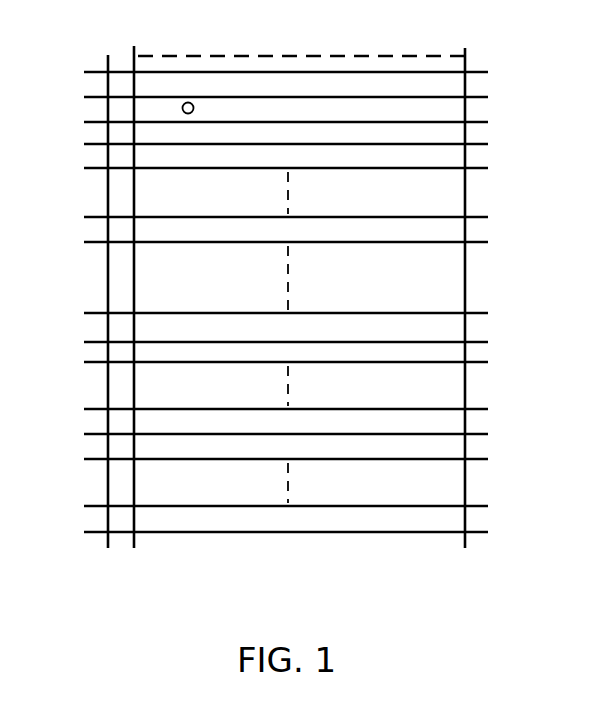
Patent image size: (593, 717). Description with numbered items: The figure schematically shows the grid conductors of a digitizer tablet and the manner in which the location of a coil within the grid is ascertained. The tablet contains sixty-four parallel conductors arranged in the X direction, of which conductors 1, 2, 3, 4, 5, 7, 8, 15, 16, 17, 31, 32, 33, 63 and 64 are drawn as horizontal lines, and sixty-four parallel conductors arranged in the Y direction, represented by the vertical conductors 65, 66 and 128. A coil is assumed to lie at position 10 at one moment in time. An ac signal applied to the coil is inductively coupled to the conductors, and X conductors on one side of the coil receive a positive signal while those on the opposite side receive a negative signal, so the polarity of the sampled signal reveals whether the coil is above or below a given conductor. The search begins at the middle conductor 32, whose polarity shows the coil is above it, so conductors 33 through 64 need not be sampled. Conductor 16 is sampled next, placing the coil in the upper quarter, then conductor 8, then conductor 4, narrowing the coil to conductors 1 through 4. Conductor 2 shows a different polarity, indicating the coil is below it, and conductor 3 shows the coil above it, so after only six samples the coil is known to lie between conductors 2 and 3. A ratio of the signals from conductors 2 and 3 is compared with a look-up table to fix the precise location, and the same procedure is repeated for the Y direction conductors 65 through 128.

The X direction grid conductor 1 is at (482, 71).
The X direction grid conductor 2 is at (482, 96).
The X direction grid conductor 3 is at (482, 121).
The X direction grid conductor 4 is at (482, 143).
The X direction grid conductor 5 is at (482, 167).
The X direction grid conductor 7 is at (482, 216).
The X direction grid conductor 8 is at (482, 241).
The coil position 10 is at (190, 102).
The X direction grid conductor 15 is at (482, 312).
The X direction grid conductor 16 is at (482, 341).
The X direction grid conductor 17 is at (482, 361).
The X direction grid conductor 31 is at (482, 408).
The X direction grid conductor 32 is at (482, 433).
The X direction grid conductor 33 is at (482, 458).
The X direction grid conductor 63 is at (482, 505).
The X direction grid conductor 64 is at (482, 531).
The Y direction grid conductor 65 is at (108, 62).
The Y direction grid conductor 66 is at (134, 46).
The Y direction grid conductor 128 is at (465, 50).